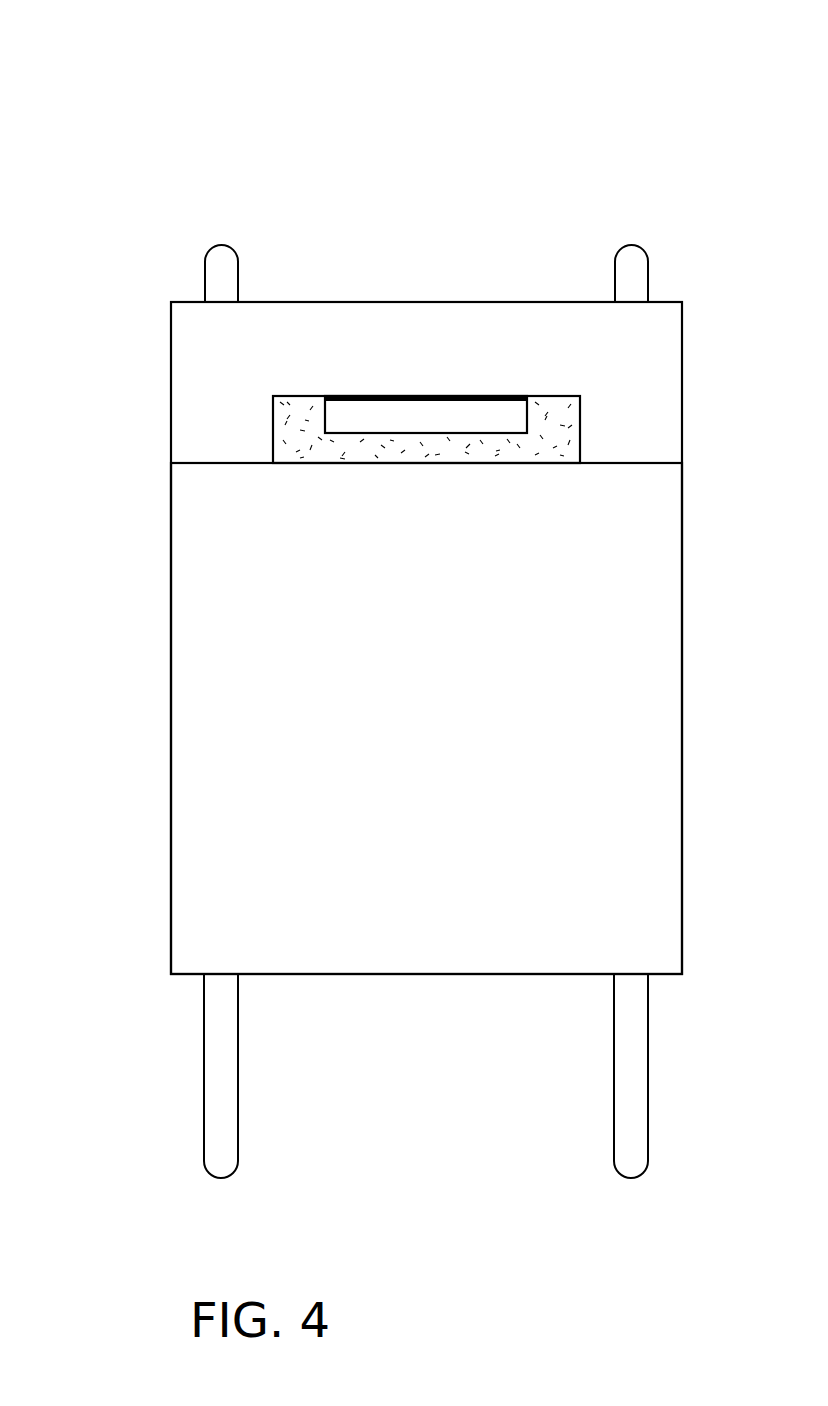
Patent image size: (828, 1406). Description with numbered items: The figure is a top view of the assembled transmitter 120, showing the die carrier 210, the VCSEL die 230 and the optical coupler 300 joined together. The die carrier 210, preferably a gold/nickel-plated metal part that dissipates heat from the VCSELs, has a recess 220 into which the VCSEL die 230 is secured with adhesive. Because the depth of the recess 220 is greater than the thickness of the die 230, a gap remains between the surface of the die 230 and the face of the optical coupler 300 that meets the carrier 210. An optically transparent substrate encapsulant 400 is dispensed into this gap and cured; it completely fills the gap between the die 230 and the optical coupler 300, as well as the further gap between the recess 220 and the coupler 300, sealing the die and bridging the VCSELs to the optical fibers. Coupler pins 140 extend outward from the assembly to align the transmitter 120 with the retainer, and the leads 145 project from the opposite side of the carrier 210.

The transmitter 120 is at (189, 122).
The upper terminal leads 145 is at (218, 260).
The coupler pins 140 is at (222, 1117).
The die carrier 210 is at (657, 384).
The recess 220 is at (425, 423).
The VCSEL die 230 is at (393, 415).
The optical coupler 300 is at (447, 689).
The substrate encapsulant 400 is at (430, 453).